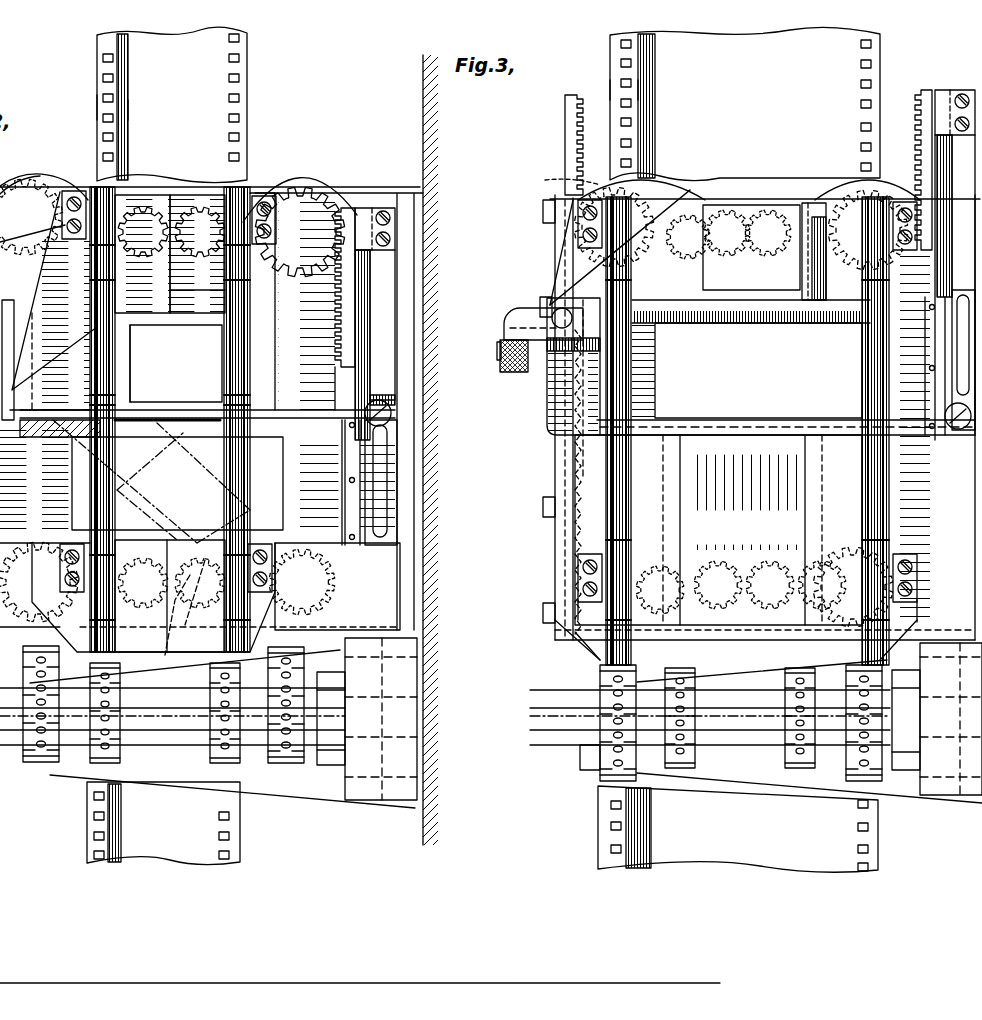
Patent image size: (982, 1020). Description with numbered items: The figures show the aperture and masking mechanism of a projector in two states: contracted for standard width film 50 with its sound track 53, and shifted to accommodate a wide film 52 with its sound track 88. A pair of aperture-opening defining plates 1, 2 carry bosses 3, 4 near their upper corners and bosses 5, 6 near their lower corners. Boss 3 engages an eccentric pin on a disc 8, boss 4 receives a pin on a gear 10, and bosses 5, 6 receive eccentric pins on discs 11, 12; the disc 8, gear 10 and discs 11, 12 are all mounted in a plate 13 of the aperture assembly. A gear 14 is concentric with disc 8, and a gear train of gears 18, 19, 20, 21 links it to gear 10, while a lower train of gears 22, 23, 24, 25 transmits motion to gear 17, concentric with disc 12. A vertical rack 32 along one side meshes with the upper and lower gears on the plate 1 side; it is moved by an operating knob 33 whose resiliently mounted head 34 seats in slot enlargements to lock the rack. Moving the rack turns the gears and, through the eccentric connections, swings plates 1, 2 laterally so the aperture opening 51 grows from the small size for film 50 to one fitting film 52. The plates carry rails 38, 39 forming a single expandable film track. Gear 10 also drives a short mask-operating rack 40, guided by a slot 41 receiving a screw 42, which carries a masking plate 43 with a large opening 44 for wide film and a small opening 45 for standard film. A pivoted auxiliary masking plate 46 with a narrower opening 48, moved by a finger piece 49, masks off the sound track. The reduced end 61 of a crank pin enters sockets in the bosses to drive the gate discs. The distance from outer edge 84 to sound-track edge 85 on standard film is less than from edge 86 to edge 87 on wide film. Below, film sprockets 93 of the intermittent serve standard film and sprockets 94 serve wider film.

In FIG. 3, the aperture-opening defining plate 1 is at (565, 455).
In FIG. 2, the aperture-opening defining plate 2 is at (270, 316).
In FIG. 3, the aperture-opening defining plate 2 is at (900, 466).
In FIG. 2, the boss 3 is at (66, 226).
In FIG. 3, the boss 3 is at (585, 240).
In FIG. 2, the boss 4 is at (276, 241).
In FIG. 2, the boss 5 is at (62, 585).
In FIG. 3, the boss 5 is at (552, 615).
In FIG. 2, the boss 6 is at (272, 582).
In FIG. 3, the boss 6 is at (905, 605).
In FIG. 2, the disc 8 is at (60, 188).
In FIG. 3, the disc 8 is at (573, 200).
In FIG. 2, the gear 10 is at (280, 210).
In FIG. 3, the gear 10 is at (858, 200).
In FIG. 3, the disc 11 is at (574, 633).
In FIG. 2, the disc 12 is at (340, 582).
In FIG. 3, the disc 12 is at (845, 540).
In FIG. 2, the plate 13 is at (385, 618).
In FIG. 3, the gear 14 is at (548, 173).
In FIG. 2, the gear 17 is at (342, 602).
In FIG. 3, the gear 17 is at (895, 556).
In FIG. 2, the gear 18 is at (92, 185).
In FIG. 3, the gear 18 is at (707, 330).
In FIG. 2, the gear 19 is at (141, 205).
In FIG. 3, the gear 19 is at (729, 212).
In FIG. 2, the gear 20 is at (191, 205).
In FIG. 3, the gear 20 is at (766, 212).
In FIG. 2, the gear 21 is at (250, 185).
In FIG. 3, the gear 21 is at (828, 200).
In FIG. 2, the gear 22 is at (140, 603).
In FIG. 2, the gear 23 is at (130, 615).
In FIG. 2, the gear 24 is at (172, 624).
In FIG. 2, the gear 25 is at (195, 602).
In FIG. 3, the rack 32 is at (566, 152).
In FIG. 3, the operating knob 33 is at (505, 335).
In FIG. 3, the resiliently mounted head 34 is at (535, 372).
In FIG. 2, the rail 38 is at (106, 282).
In FIG. 3, the rail 38 is at (618, 378).
In FIG. 2, the rail 39 is at (232, 289).
In FIG. 3, the rail 39 is at (865, 355).
In FIG. 2, the mask-operating rack 40 is at (348, 212).
In FIG. 3, the mask-operating rack 40 is at (922, 95).
In FIG. 2, the slot 41 is at (380, 468).
In FIG. 2, the screw 42 is at (390, 428).
In FIG. 2, the masking plate 43 is at (303, 420).
In FIG. 3, the masking plate 43 is at (715, 428).
In FIG. 2, the large opening 44 is at (262, 440).
In FIG. 3, the large opening 44 is at (808, 428).
In FIG. 3, the small opening 45 is at (705, 300).
In FIG. 2, the auxiliary masking plate 46 is at (75, 332).
In FIG. 3, the auxiliary masking plate 46 is at (603, 267).
In FIG. 2, the opening 48 is at (130, 390).
In FIG. 3, the opening 48 is at (748, 292).
In FIG. 3, the finger piece 49 is at (545, 305).
In FIG. 2, the standard width film 50 is at (250, 62).
In FIG. 2, the aperture opening 51 is at (176, 363).
In FIG. 3, the aperture opening 51 is at (758, 370).
In FIG. 3, the wide film 52 is at (745, 103).
In FIG. 2, the sound track 53 is at (128, 72).
In FIG. 2, the reduced end of crank pin 61 is at (266, 230).
In FIG. 3, the reduced end of crank pin 61 is at (580, 583).
In FIG. 2, the outer edge of standard film 84 is at (96, 108).
In FIG. 2, the outside edge of sound track 85 is at (130, 111).
In FIG. 3, the outside edge of wide film 86 is at (608, 90).
In FIG. 3, the adjacent edge of sound track 87 is at (636, 90).
In FIG. 3, the sound track 88 is at (648, 60).
In FIG. 2, the film sprockets 93 is at (222, 748).
In FIG. 3, the film sprockets 93 is at (790, 750).
In FIG. 2, the film sprockets 94 is at (50, 770).
In FIG. 3, the film sprockets 94 is at (640, 780).